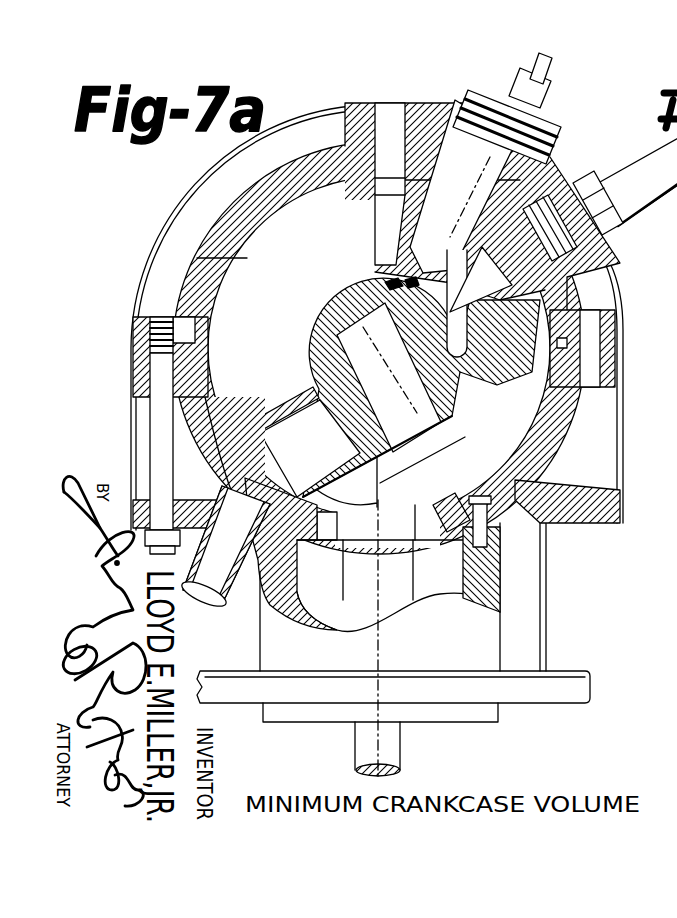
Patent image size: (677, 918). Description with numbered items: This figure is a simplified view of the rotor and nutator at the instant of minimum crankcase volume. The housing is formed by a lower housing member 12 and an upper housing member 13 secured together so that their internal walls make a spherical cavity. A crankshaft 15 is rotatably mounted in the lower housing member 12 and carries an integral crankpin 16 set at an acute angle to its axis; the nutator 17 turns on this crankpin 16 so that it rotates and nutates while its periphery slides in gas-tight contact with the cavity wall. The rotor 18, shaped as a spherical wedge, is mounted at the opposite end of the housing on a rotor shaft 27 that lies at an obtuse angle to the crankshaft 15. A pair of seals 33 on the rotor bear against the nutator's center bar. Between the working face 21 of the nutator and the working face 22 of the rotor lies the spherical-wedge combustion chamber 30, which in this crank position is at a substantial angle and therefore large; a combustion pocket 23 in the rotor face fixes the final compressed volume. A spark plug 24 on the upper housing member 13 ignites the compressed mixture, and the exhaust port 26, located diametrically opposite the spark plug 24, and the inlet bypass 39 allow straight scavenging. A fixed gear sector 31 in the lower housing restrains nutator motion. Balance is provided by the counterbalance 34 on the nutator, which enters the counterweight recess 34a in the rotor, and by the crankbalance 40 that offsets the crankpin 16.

The lower housing member 12 is at (216, 488).
The upper housing member 13 is at (293, 178).
The crankshaft 15 is at (402, 748).
The crankpin 16 is at (418, 387).
The nutator 17 is at (268, 422).
The rotor 18 is at (505, 163).
The working face of the nutator 21 is at (290, 398).
The working face of the rotor 22 is at (395, 268).
The combustion pocket 23 is at (405, 224).
The spark plug 24 is at (590, 196).
The exhaust port 26 is at (383, 118).
The rotor shaft 27 is at (553, 166).
The combustion chamber 30 is at (235, 260).
The fixed gear sector 31 is at (492, 556).
The seals 33 is at (383, 288).
The counterbalance 34 is at (533, 332).
The counterweight recess 34a is at (636, 154).
The inlet bypass 39 is at (284, 540).
The crankbalance 40 is at (355, 505).